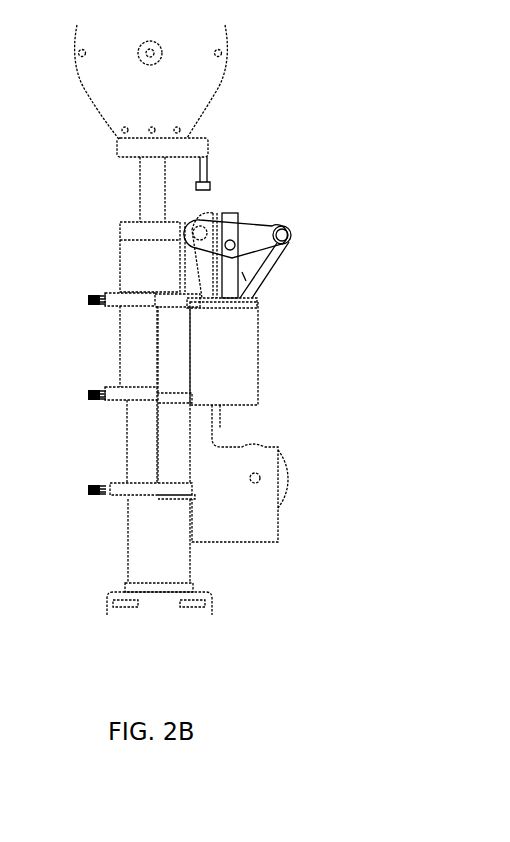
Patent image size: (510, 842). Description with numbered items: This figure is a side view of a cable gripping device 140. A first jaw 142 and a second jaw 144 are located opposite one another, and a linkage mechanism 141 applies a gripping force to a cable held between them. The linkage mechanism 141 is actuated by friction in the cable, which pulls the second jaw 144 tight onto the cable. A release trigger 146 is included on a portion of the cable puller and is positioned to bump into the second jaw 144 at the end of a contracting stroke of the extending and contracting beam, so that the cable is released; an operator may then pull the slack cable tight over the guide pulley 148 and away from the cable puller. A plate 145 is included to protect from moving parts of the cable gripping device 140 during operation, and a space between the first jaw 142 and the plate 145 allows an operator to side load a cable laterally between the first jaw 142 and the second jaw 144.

The cable gripping device 140 is at (278, 373).
The linkage mechanism 141 is at (280, 252).
The first jaw 142 is at (238, 222).
The second jaw 144 is at (212, 212).
The plate 145 is at (230, 342).
The release trigger 146 is at (208, 163).
The guide pulley 148 is at (283, 473).